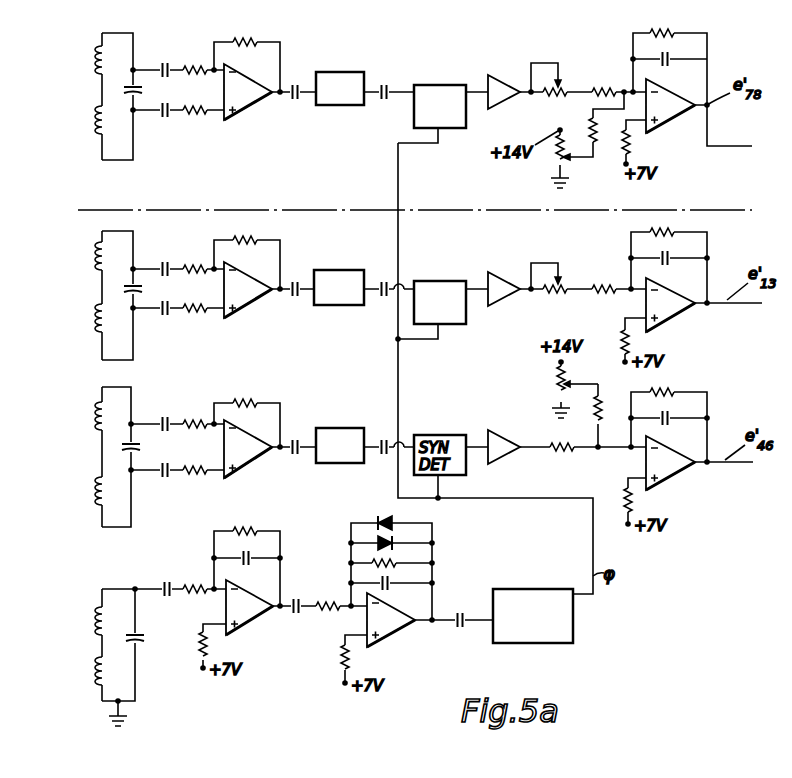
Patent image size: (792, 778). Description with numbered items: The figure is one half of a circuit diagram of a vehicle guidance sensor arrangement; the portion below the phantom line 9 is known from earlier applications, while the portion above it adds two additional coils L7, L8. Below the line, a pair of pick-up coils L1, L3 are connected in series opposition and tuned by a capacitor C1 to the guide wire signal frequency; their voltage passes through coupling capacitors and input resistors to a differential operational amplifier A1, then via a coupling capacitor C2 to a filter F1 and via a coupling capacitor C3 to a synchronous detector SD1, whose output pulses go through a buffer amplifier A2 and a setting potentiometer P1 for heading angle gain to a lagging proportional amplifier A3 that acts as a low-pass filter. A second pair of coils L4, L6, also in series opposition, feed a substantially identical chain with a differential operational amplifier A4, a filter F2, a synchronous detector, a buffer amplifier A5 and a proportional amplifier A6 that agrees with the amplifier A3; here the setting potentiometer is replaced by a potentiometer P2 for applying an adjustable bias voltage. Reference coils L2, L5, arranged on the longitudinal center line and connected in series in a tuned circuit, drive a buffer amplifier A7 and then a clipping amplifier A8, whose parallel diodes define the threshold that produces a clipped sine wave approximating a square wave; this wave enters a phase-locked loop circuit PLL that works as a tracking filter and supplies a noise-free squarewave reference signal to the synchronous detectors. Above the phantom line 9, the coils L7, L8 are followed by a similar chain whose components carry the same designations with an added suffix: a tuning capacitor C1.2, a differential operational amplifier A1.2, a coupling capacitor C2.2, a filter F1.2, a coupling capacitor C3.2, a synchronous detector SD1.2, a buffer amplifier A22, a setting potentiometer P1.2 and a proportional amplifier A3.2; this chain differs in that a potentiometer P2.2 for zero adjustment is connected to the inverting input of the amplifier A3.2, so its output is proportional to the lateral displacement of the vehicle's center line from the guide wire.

The additional coil L7 is at (79, 69).
The additional coil L8 is at (79, 133).
The tuning capacitor C1.2 is at (118, 82).
The differential operational amplifier A1.2 is at (247, 82).
The coupling capacitor C2.2 is at (301, 107).
The filter F1.2 is at (340, 88).
The coupling capacitor C3.2 is at (390, 78).
The synchronous detector SD1.2 is at (441, 97).
The buffer amplifier A22 is at (499, 80).
The setting potentiometer P1.2 is at (549, 88).
The potentiometer for zero adjustment P2.2 is at (579, 157).
The proportional amplifier A3.2 is at (667, 113).
The phantom line 9 is at (718, 209).
The coil L1 is at (79, 267).
The coil L3 is at (79, 332).
The capacitor C1 is at (124, 278).
The differential operational amplifier A1 is at (248, 290).
The coupling capacitor C2 is at (293, 304).
The filter F1 is at (339, 287).
The coupling capacitor C3 is at (382, 275).
The synchronous detector SD1 is at (440, 293).
The buffer amplifier A2 is at (500, 300).
The setting potentiometer P1 is at (549, 288).
The potentiometer P2 is at (562, 388).
The lagging proportional amplifier A3 is at (670, 305).
The coil L4 is at (79, 432).
The coil L6 is at (79, 502).
The differential operational amplifier A4 is at (248, 449).
The filter F2 is at (340, 445).
The buffer amplifier A5 is at (498, 455).
The proportional amplifier A6 is at (670, 463).
The reference coil L2 is at (79, 623).
The reference coil L5 is at (79, 679).
The buffer amplifier A7 is at (249, 607).
The clipping amplifier A8 is at (391, 620).
The phase-locked loop circuit PLL is at (533, 603).